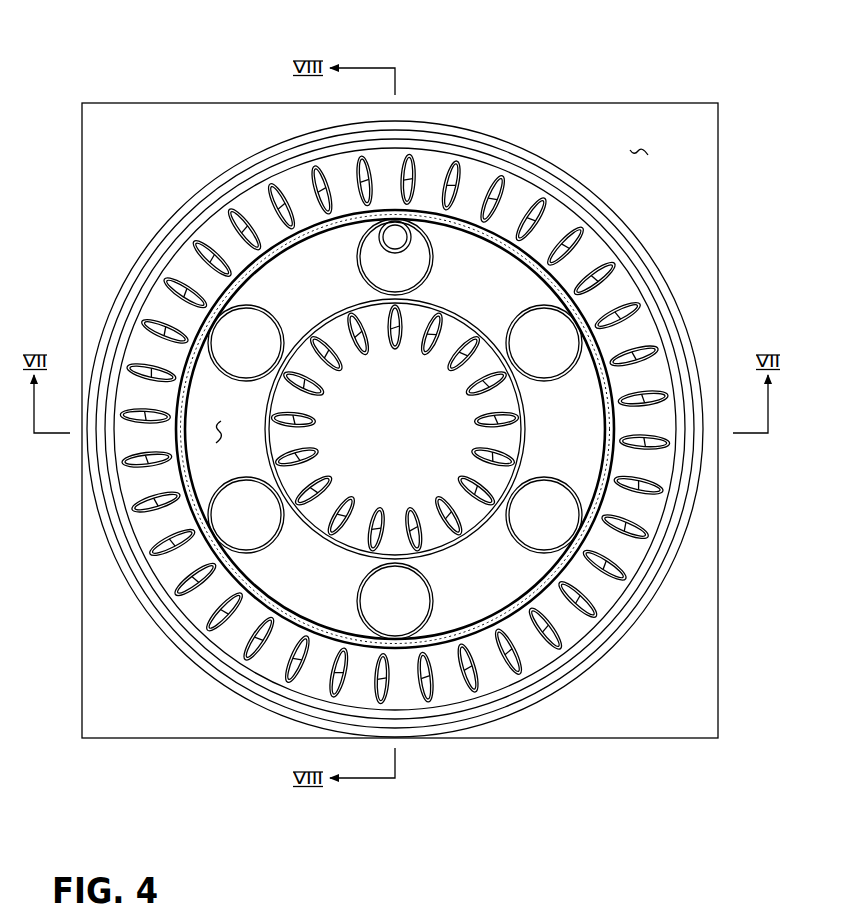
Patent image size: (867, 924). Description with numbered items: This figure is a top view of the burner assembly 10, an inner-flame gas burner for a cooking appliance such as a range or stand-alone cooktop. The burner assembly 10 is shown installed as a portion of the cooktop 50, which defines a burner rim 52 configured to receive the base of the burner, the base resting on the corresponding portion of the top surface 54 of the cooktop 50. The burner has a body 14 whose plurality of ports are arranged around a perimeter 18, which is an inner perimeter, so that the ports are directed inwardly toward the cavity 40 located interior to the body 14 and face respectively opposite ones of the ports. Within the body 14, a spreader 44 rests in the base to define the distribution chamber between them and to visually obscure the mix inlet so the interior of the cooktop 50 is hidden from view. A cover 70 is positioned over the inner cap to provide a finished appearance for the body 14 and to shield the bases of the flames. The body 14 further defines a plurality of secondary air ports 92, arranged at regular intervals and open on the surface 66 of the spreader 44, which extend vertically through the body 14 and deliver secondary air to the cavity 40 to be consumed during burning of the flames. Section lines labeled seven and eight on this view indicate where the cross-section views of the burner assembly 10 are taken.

The burner assembly 10 is at (443, 72).
The body 14 is at (627, 243).
The perimeter 18 is at (308, 608).
The cavity 40 is at (558, 460).
The spreader 44 is at (295, 282).
The cooktop 50 is at (592, 137).
The burner rim 52 is at (645, 265).
The top surface 54 is at (638, 150).
The surface 66 is at (217, 430).
The cover 70 is at (482, 177).
The secondary air ports 92 is at (377, 257).